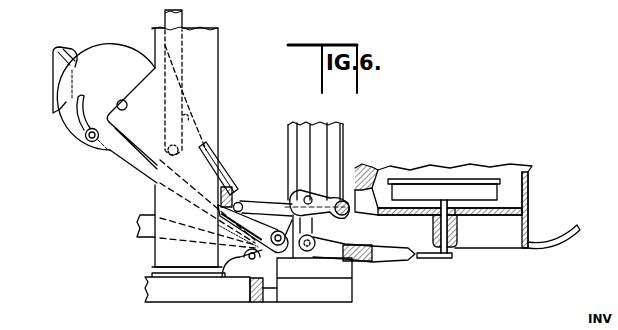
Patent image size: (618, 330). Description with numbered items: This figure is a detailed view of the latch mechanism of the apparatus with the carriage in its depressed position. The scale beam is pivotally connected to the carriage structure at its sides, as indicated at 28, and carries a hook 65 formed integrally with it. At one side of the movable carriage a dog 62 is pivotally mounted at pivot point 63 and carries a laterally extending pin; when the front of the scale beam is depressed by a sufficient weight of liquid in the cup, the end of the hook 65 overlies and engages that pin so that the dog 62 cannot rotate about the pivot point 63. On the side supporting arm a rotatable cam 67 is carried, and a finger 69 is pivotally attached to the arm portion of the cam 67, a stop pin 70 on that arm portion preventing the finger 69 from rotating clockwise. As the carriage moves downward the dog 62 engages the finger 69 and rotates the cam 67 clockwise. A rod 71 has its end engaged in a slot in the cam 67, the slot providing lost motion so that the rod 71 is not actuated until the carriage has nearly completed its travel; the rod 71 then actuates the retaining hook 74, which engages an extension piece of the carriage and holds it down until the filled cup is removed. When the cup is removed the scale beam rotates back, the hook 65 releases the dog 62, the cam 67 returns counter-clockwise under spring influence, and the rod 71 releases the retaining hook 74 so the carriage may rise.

The rotatable cam 67 is at (110, 52).
The rod 71 is at (133, 177).
The stop pin 70 is at (237, 165).
The retaining hook 74 is at (279, 198).
The finger 69 is at (260, 202).
The hook 65 is at (305, 125).
The dog 62 is at (346, 200).
The pivot point 63 is at (368, 178).
The pivot points of scale beam 28 is at (305, 252).